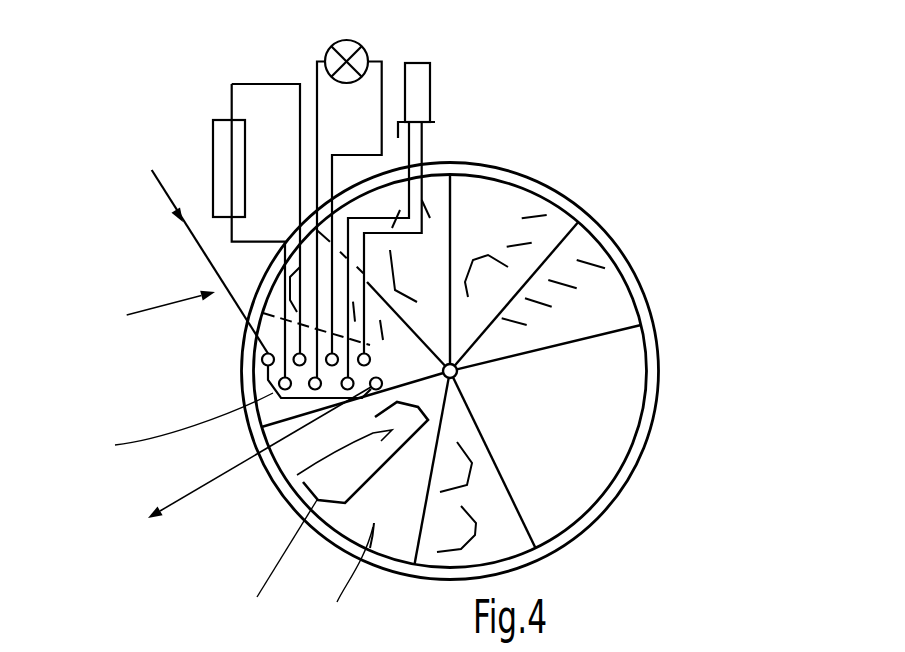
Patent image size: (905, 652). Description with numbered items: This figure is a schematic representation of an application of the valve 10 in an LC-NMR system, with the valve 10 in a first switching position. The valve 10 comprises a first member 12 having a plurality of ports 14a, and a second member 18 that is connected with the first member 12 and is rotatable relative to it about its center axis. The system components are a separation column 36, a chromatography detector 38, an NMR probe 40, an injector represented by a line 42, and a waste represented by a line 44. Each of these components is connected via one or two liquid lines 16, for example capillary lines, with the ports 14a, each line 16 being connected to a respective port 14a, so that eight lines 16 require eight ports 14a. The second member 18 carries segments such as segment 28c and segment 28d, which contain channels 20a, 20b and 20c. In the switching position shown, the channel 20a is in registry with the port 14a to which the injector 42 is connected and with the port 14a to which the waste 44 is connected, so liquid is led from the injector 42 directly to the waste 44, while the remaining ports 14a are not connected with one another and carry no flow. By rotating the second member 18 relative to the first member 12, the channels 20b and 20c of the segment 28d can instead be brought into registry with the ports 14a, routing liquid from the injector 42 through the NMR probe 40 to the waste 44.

The valve 10 is at (500, 330).
The first member 12 is at (519, 371).
The second member 18 is at (533, 371).
The liquid lines 16 is at (129, 300).
The injector 42 is at (162, 190).
The waste 44 is at (182, 500).
The separation column 36 is at (222, 153).
The chromatography detector 38 is at (335, 62).
The NMR probe 40 is at (418, 101).
The ports 14a is at (229, 376).
The channel 20a is at (174, 426).
The channel 20b is at (266, 559).
The channel 20c is at (297, 475).
The segment 28c is at (281, 422).
The segment 28d is at (353, 579).